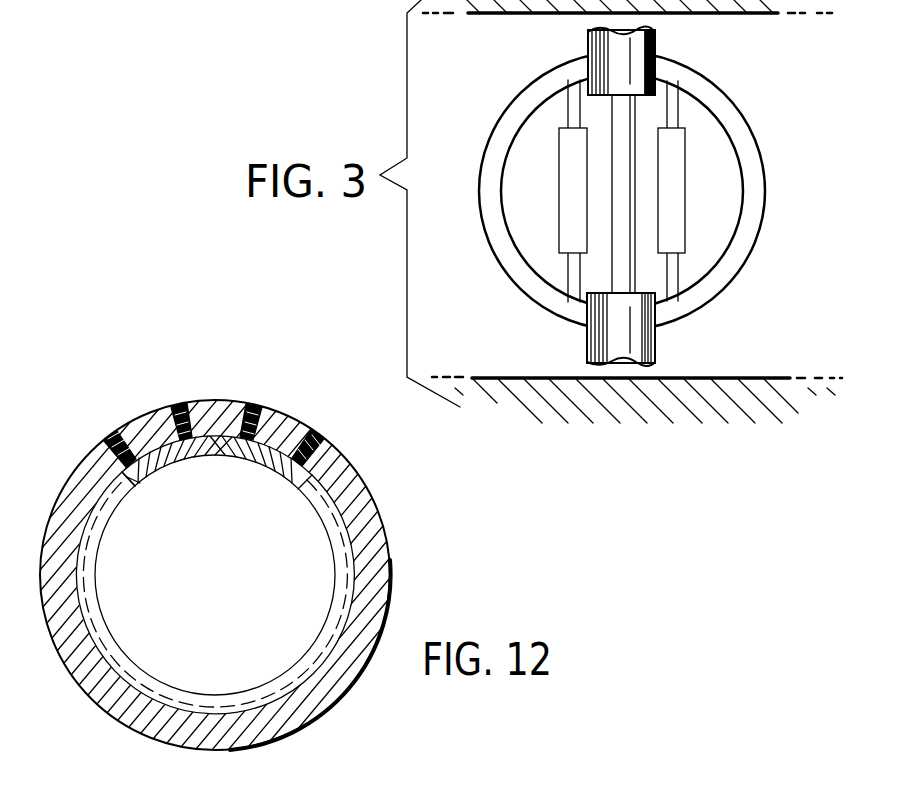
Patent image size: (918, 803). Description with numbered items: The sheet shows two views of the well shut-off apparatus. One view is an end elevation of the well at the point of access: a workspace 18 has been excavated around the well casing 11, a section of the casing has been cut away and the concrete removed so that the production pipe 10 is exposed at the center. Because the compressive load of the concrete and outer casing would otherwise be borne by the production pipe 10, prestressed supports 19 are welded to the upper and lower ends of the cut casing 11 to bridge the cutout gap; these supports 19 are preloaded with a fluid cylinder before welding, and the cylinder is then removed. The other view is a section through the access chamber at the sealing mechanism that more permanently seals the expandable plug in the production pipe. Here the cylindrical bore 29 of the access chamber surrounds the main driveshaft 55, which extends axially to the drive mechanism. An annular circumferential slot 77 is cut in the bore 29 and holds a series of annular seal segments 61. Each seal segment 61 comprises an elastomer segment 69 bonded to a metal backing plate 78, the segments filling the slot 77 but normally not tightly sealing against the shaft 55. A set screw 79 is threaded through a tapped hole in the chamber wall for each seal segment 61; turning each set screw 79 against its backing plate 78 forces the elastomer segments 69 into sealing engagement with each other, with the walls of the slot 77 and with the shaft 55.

In FIG. 3, the production pipe 10 is at (612, 195).
In FIG. 3, the well casing 11 is at (655, 40).
In FIG. 3, the workspace 18 is at (766, 247).
In FIG. 3, the prestressed supports 19 is at (758, 145).
In FIG. 12, the cylindrical bore 29 is at (140, 668).
In FIG. 12, the main driveshaft 55 is at (383, 533).
In FIG. 12, the annular seal segments 61 is at (320, 460).
In FIG. 12, the elastomer segment 69 is at (155, 473).
In FIG. 12, the annular circumferential slot 77 is at (350, 550).
In FIG. 12, the metal backing plate 78 is at (220, 458).
In FIG. 12, the set screw 79 is at (197, 365).